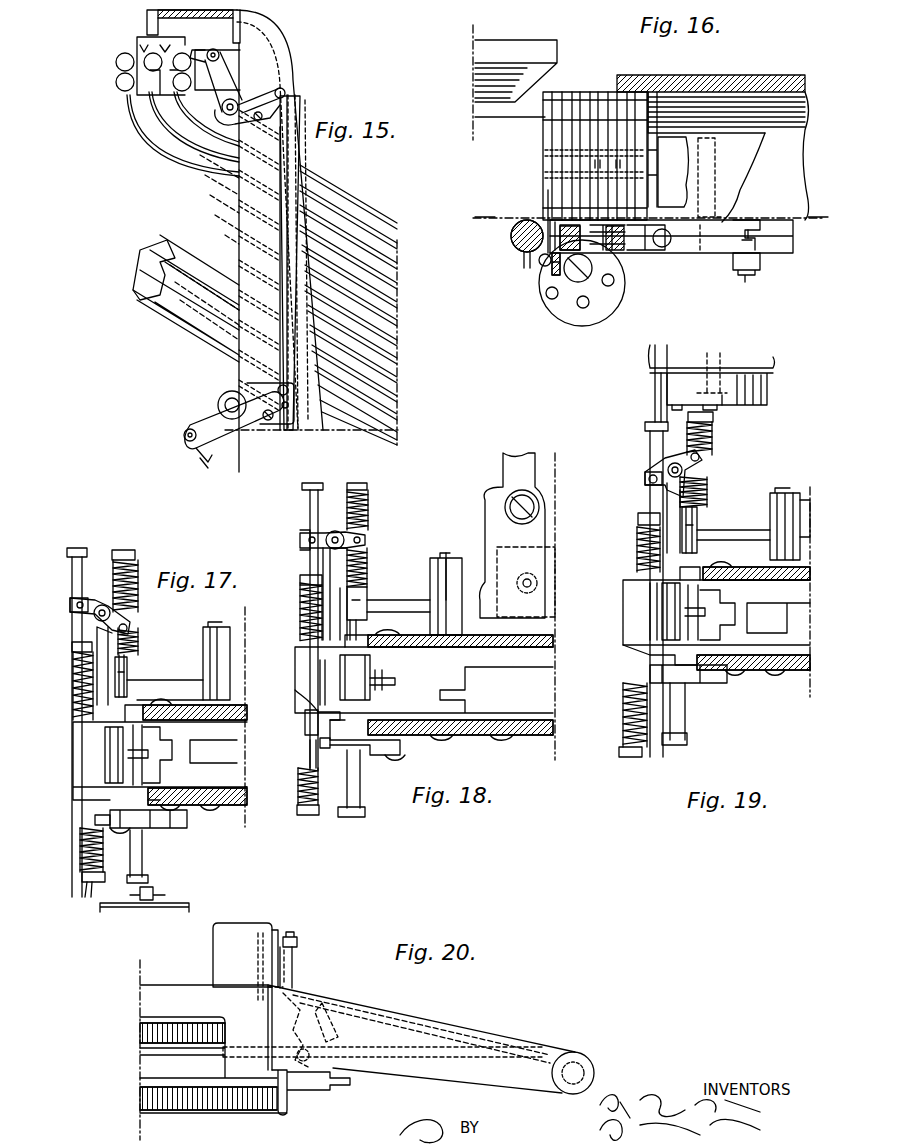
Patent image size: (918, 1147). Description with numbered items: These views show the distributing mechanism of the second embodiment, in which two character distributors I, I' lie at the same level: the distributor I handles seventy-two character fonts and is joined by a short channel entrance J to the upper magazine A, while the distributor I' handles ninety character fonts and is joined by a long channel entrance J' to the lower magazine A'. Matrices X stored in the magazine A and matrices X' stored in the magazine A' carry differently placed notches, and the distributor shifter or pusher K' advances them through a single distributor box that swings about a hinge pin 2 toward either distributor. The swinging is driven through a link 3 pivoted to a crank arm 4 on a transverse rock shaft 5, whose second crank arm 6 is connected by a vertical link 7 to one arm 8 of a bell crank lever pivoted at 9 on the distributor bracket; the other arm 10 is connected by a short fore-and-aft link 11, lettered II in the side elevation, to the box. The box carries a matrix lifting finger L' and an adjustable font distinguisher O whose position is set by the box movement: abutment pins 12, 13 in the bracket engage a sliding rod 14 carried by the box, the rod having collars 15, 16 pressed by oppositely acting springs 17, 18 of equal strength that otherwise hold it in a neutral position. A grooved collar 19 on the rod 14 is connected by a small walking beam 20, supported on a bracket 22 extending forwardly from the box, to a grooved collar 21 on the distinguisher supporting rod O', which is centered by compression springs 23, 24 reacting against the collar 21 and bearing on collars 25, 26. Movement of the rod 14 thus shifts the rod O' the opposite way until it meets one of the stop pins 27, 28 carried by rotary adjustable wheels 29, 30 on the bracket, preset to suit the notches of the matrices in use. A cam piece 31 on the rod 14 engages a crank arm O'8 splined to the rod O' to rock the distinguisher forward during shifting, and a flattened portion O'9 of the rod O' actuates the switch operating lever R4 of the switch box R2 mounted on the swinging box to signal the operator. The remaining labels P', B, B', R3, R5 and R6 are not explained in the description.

In FIG. 15, the character distributor I is at (222, 70).
In FIG. 16, the character distributor I is at (640, 83).
In FIG. 17, the character distributor I is at (226, 817).
In FIG. 18, the character distributor I is at (533, 757).
In FIG. 19, the character distributor I is at (781, 693).
In FIG. 20, the character distributor I is at (231, 1019).
In FIG. 15, the character distributor I' is at (140, 61).
In FIG. 20, the character distributor I' is at (213, 1113).
In FIG. 15, the short fore-and-aft link II is at (205, 50).
In FIG. 20, the short fore-and-aft link II is at (327, 1000).
In FIG. 18, the short fore-and-aft link 11 is at (512, 472).
In FIG. 15, the bell crank lever arm 10 is at (232, 70).
In FIG. 20, the bell crank lever arm 10 is at (268, 1004).
In FIG. 15, the bell crank pivot 9 is at (240, 100).
In FIG. 15, the bell crank lever arm 8 is at (282, 95).
In FIG. 20, the bell crank lever arm 8 is at (293, 958).
In FIG. 15, the vertical link 7 is at (287, 215).
In FIG. 20, the vertical link 7 is at (292, 937).
In FIG. 15, the push rod P' is at (244, 258).
In FIG. 15, the channel entrance J is at (180, 127).
In FIG. 15, the channel entrance J' is at (167, 135).
In FIG. 15, the upper magazine A is at (298, 231).
In FIG. 15, the lower magazine A' is at (363, 342).
In FIG. 15, the support B is at (362, 363).
In FIG. 15, the support plate B' is at (367, 405).
In FIG. 15, the crank arm 4 is at (210, 420).
In FIG. 15, the link 3 is at (205, 455).
In FIG. 15, the transverse rock shaft 5 is at (232, 418).
In FIG. 15, the second crank arm 6 is at (265, 420).
In FIG. 16, the matrices X is at (570, 156).
In FIG. 16, the matrices X' is at (574, 149).
In FIG. 16, the distributor shifter K' is at (697, 172).
In FIG. 16, the font distinguisher O is at (542, 217).
In FIG. 17, the font distinguisher O is at (97, 757).
In FIG. 18, the font distinguisher O is at (328, 682).
In FIG. 19, the font distinguisher O is at (648, 612).
In FIG. 17, the font distinguisher supporting rod O' is at (149, 768).
In FIG. 18, the font distinguisher supporting rod O' is at (367, 718).
In FIG. 19, the font distinguisher supporting rod O' is at (705, 626).
In FIG. 16, the matrix lifting finger L' is at (523, 279).
In FIG. 17, the matrix lifting finger L' is at (84, 755).
In FIG. 18, the matrix lifting finger L' is at (314, 675).
In FIG. 19, the matrix lifting finger L' is at (641, 611).
In FIG. 16, the switch box R2 is at (753, 157).
In FIG. 18, the switch box R2 is at (490, 545).
In FIG. 16, the rack bracket R3 is at (762, 232).
In FIG. 16, the switch operating lever R4 is at (765, 255).
In FIG. 19, the switch operating lever R4 is at (805, 505).
In FIG. 16, the rack pin R5 is at (663, 240).
In FIG. 18, the rack pin R5 is at (450, 555).
In FIG. 19, the rack pin R5 is at (787, 495).
In FIG. 17, the rack post R6 is at (187, 677).
In FIG. 18, the rack post R6 is at (410, 612).
In FIG. 19, the rack post R6 is at (758, 550).
In FIG. 16, the spring 17 is at (490, 198).
In FIG. 17, the spring 17 is at (80, 850).
In FIG. 18, the spring 17 is at (300, 792).
In FIG. 19, the spring 17 is at (625, 718).
In FIG. 16, the sliding rod 14 is at (512, 238).
In FIG. 17, the sliding rod 14 is at (78, 548).
In FIG. 18, the sliding rod 14 is at (308, 505).
In FIG. 19, the sliding rod 14 is at (650, 455).
In FIG. 16, the rotary adjustable wheel 30 is at (598, 296).
In FIG. 19, the rotary adjustable wheel 30 is at (735, 380).
In FIG. 17, the grooved collar 19 is at (72, 600).
In FIG. 18, the grooved collar 19 is at (300, 532).
In FIG. 19, the grooved collar 19 is at (645, 478).
In FIG. 17, the walking beam 20 is at (97, 605).
In FIG. 18, the walking beam 20 is at (330, 535).
In FIG. 19, the walking beam 20 is at (670, 465).
In FIG. 17, the collar 26 is at (128, 550).
In FIG. 18, the collar 26 is at (360, 485).
In FIG. 19, the collar 26 is at (713, 417).
In FIG. 17, the compression spring 24 is at (135, 568).
In FIG. 18, the compression spring 24 is at (368, 515).
In FIG. 19, the compression spring 24 is at (712, 437).
In FIG. 17, the grooved collar 21 is at (130, 628).
In FIG. 18, the grooved collar 21 is at (368, 537).
In FIG. 19, the grooved collar 21 is at (703, 458).
In FIG. 17, the compression spring 23 is at (140, 640).
In FIG. 18, the compression spring 23 is at (368, 555).
In FIG. 19, the compression spring 23 is at (708, 485).
In FIG. 17, the collar 16 is at (72, 646).
In FIG. 18, the collar 16 is at (302, 583).
In FIG. 19, the collar 16 is at (638, 520).
In FIG. 17, the bracket 22 is at (97, 668).
In FIG. 18, the bracket 22 is at (325, 566).
In FIG. 19, the bracket 22 is at (667, 500).
In FIG. 17, the spring 18 is at (74, 690).
In FIG. 18, the spring 18 is at (300, 620).
In FIG. 19, the spring 18 is at (637, 548).
In FIG. 17, the collar 25 is at (117, 690).
In FIG. 18, the collar 25 is at (362, 590).
In FIG. 19, the collar 25 is at (700, 512).
In FIG. 17, the crank arm O'8 is at (116, 812).
In FIG. 18, the crank arm O'8 is at (289, 722).
In FIG. 19, the crank arm O'8 is at (657, 671).
In FIG. 17, the flattened portion O'9 is at (76, 824).
In FIG. 18, the flattened portion O'9 is at (295, 743).
In FIG. 17, the collar 15 is at (82, 877).
In FIG. 18, the collar 15 is at (302, 812).
In FIG. 19, the collar 15 is at (619, 752).
In FIG. 17, the abutment pin 12 is at (85, 893).
In FIG. 17, the abutment pin 27 is at (155, 892).
In FIG. 17, the rotary adjustable wheel 29 is at (120, 908).
In FIG. 18, the cam piece 31 is at (320, 750).
In FIG. 19, the abutment pin 28 is at (673, 382).
In FIG. 19, the abutment pin 13 is at (657, 408).
In FIG. 20, the hinge pin 2 is at (587, 1063).